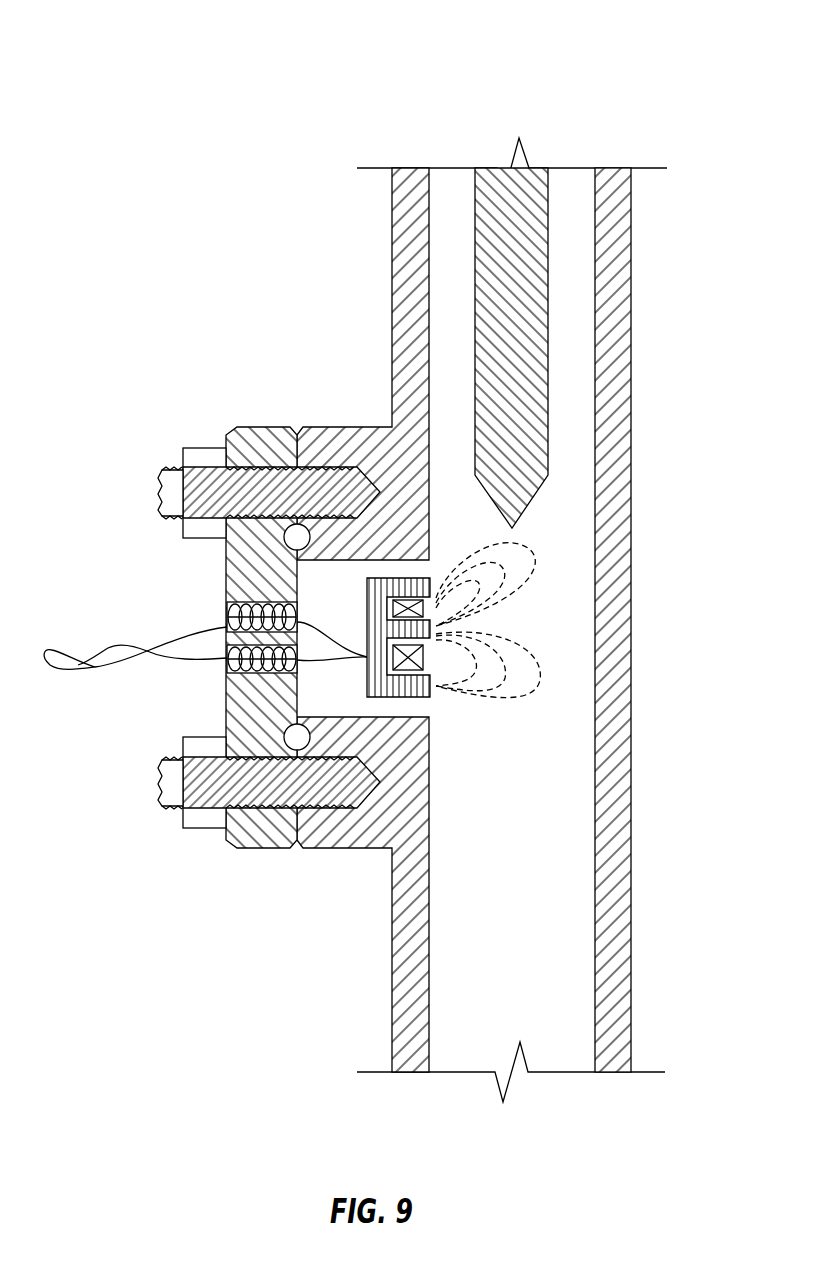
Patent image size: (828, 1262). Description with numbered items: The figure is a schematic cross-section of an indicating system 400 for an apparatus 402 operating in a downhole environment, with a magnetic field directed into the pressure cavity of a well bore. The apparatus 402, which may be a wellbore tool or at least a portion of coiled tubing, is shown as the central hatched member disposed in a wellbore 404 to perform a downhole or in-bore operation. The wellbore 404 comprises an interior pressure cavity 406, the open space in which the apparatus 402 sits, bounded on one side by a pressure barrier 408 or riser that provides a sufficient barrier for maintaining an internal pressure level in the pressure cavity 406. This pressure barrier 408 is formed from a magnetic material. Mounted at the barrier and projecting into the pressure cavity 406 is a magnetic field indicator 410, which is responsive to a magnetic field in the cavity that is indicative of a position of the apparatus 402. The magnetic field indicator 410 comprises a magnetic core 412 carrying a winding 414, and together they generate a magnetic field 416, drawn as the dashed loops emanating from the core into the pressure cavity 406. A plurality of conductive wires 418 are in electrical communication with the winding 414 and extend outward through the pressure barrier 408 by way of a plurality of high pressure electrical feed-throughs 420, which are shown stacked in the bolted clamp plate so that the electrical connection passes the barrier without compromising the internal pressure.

The indicating system 400 is at (376, 555).
The apparatus 402 is at (550, 195).
The wellbore 404 is at (630, 593).
The pressure cavity 406 is at (453, 184).
The pressure barrier 408 is at (408, 268).
The magnetic field indicator 410 is at (432, 622).
The magnetic core 412 is at (400, 697).
The winding 414 is at (432, 657).
The magnetic field 416 is at (535, 678).
The conductive wires 418 is at (317, 625).
The high pressure electrical feed-throughs 420 is at (218, 609).